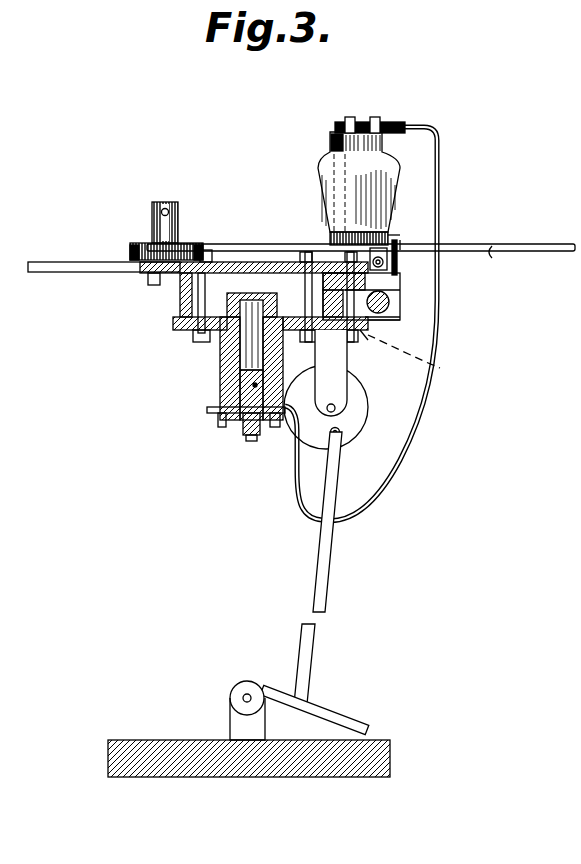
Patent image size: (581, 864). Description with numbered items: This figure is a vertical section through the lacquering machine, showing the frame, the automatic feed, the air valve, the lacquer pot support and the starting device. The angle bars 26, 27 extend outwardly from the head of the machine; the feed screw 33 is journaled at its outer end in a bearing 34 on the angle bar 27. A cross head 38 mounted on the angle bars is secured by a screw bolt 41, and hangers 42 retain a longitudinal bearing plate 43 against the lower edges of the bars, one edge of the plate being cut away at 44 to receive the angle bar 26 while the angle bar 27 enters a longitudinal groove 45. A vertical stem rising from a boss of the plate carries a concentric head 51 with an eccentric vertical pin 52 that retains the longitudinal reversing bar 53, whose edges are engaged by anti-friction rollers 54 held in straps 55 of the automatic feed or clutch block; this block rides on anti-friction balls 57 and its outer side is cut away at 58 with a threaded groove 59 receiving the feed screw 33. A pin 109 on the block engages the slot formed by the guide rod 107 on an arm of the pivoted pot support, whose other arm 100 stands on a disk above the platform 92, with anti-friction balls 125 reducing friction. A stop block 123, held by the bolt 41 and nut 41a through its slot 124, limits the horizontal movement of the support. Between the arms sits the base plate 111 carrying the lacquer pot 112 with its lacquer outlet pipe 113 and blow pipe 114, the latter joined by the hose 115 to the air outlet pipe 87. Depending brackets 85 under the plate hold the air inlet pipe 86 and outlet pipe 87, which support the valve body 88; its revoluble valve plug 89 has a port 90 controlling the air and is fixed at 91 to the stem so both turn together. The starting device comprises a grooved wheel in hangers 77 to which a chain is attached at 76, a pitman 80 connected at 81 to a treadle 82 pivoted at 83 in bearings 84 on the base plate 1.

The base plate 1 is at (118, 745).
The angle bar 26 is at (183, 302).
The angle bar 27 is at (380, 338).
The feed screw 33 is at (395, 320).
The bearing 34 is at (400, 318).
The cross head 38 is at (140, 270).
The screw bolt 41 is at (398, 237).
The nut 41a is at (402, 290).
The hanger 42 is at (180, 298).
The longitudinal bearing plate 43 is at (220, 342).
The cut away edge 44 is at (185, 326).
The longitudinal groove 45 is at (355, 350).
The concentric head 51 is at (220, 330).
The vertical pin 52 is at (238, 292).
The longitudinal reversing bar 53 is at (188, 306).
The anti-friction roller 54 is at (150, 333).
The strap 55 is at (275, 292).
The anti-friction ball 57 is at (440, 368).
The cut away portion 58 is at (400, 295).
The threaded groove 59 is at (400, 306).
The chain attachment point 76 is at (162, 206).
The hanger 77 is at (150, 213).
The pitman 80 is at (325, 606).
The pitman connection 81 is at (307, 705).
The treadle 82 is at (350, 727).
The treadle pivot 83 is at (245, 697).
The bearing 84 is at (237, 725).
The depending bracket 85 is at (220, 350).
The air inlet pipe 86 is at (213, 408).
The air outlet pipe 87 is at (340, 434).
The valve body 88 is at (240, 440).
The revoluble valve plug 89 is at (254, 437).
The port 90 is at (217, 423).
The plug fixing 91 is at (248, 390).
The platform 92 is at (46, 271).
The arm 100 is at (548, 236).
The longitudinal guide rod 107 is at (505, 253).
The pin 109 is at (398, 246).
The base plate 111 is at (338, 234).
The lacquer pot 112 is at (398, 165).
The lacquer outlet pipe 113 is at (335, 134).
The blow pipe 114 is at (366, 124).
The flexible connection or hose 115 is at (455, 152).
The stop block 123 is at (395, 263).
The slot 124 is at (292, 290).
The anti-friction ball 125 is at (130, 254).